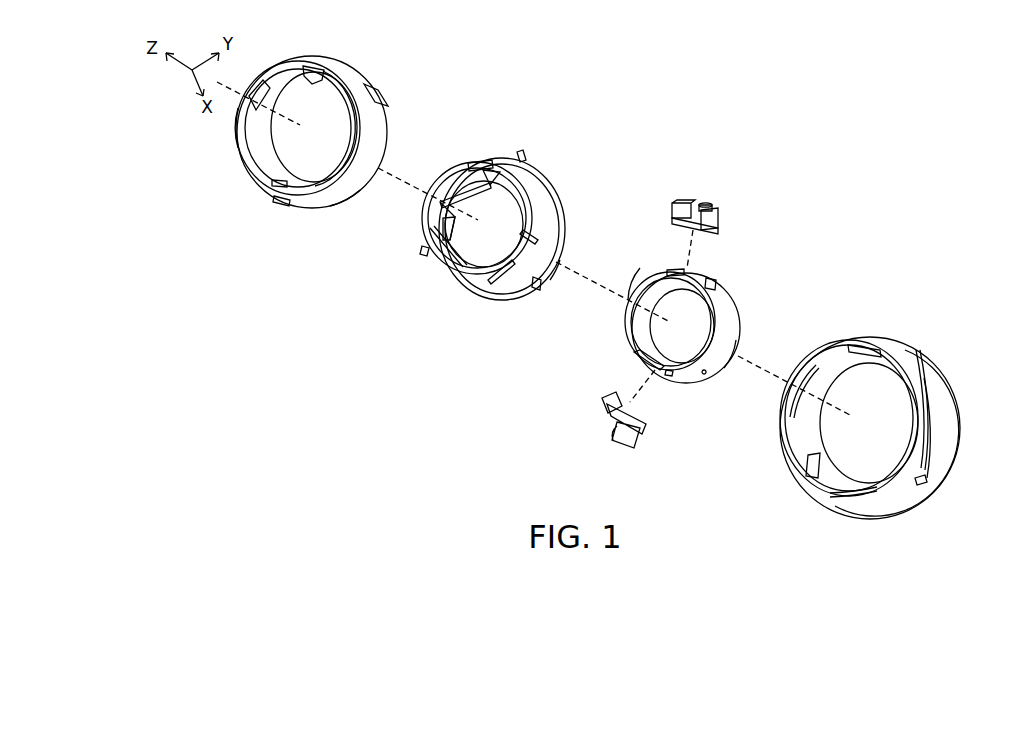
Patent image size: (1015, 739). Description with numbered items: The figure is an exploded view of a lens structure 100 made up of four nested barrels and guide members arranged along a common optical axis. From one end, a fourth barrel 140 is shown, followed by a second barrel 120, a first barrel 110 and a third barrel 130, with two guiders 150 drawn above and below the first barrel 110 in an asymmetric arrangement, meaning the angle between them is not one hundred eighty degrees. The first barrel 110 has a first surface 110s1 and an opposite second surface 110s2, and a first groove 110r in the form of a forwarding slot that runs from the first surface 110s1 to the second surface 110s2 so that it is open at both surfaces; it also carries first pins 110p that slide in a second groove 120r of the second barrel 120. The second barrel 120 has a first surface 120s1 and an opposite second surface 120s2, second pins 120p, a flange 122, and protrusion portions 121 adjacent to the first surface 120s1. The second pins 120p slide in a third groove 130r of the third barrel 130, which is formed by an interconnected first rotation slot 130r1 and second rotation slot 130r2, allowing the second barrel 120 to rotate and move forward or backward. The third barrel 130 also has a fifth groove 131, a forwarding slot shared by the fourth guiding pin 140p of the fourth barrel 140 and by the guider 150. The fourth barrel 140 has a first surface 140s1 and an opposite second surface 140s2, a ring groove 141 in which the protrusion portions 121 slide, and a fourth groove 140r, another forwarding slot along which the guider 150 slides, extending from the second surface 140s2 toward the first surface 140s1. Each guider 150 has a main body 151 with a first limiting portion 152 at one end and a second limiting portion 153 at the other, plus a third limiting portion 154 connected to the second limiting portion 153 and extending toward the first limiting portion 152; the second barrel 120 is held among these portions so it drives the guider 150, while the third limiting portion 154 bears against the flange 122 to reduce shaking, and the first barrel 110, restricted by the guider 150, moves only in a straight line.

The lens structure 100 is at (598, 96).
The first barrel 110 is at (748, 303).
The first groove 110r is at (675, 268).
The first surface 110s1 is at (640, 285).
The second surface 110s2 is at (722, 363).
The first pin 110p is at (717, 297).
The second barrel 120 is at (577, 200).
The second groove 120r is at (442, 190).
The first surface 120s1 is at (457, 163).
The second surface 120s2 is at (553, 277).
The second pin 120p is at (519, 152).
The protrusion portion 121 is at (490, 162).
The flange 122 is at (543, 187).
The third barrel 130 is at (880, 338).
The third groove 130r is at (880, 374).
The first rotation slot 130r1 is at (927, 443).
The second rotation slot 130r2 is at (922, 382).
The fifth groove 131 is at (840, 352).
The fourth barrel 140 is at (352, 67).
The fourth groove 140r is at (305, 88).
The fourth guiding pin 140p is at (383, 100).
The first surface 140s1 is at (242, 133).
The second surface 140s2 is at (320, 210).
The ring groove 141 is at (250, 154).
The guider 150 is at (707, 291).
The main body 151 is at (739, 215).
The first limiting portion 152 is at (672, 207).
The second limiting portion 153 is at (713, 213).
The third limiting portion 154 is at (705, 203).